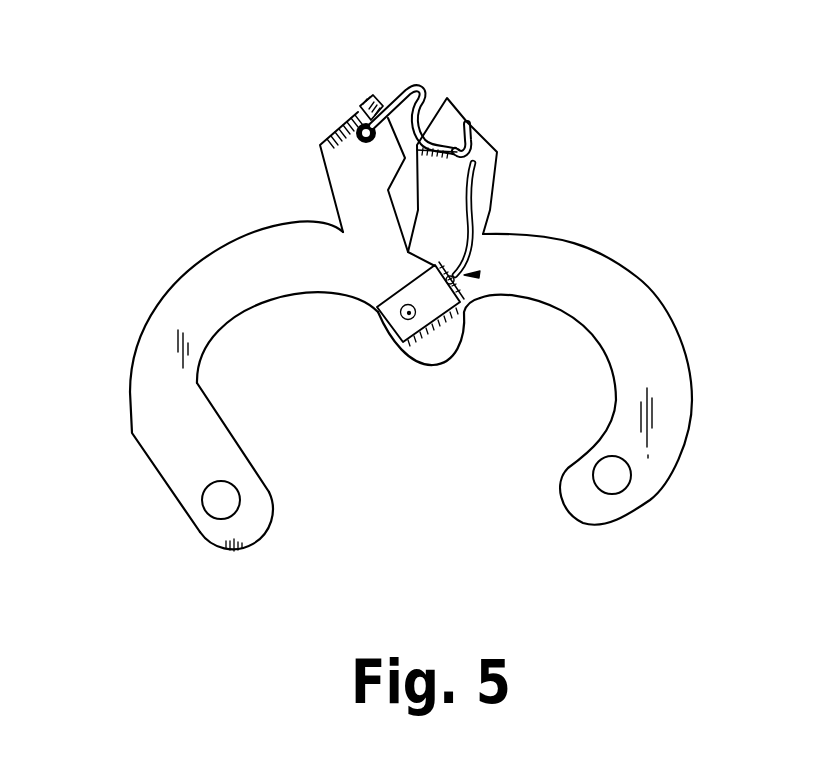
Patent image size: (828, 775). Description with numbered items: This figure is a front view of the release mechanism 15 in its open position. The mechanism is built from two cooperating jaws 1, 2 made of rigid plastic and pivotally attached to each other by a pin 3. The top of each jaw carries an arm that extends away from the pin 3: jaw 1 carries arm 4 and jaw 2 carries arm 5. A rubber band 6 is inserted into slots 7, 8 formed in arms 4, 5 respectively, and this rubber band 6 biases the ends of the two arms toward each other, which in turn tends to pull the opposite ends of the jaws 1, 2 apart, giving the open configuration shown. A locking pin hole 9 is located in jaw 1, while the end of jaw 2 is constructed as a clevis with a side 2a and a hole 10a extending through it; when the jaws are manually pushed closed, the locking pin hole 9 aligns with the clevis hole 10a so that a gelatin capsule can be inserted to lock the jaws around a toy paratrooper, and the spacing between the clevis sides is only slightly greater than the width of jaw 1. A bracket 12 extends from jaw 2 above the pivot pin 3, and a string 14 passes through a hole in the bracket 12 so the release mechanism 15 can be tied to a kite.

The jaw 1 is at (650, 478).
The jaw 2 is at (160, 352).
The side of clevis 2a is at (250, 527).
The pin 3 is at (406, 358).
The arm 4 is at (497, 151).
The arm 5 is at (338, 165).
The rubber band 6 is at (405, 96).
The slot 7 is at (468, 120).
The slot 8 is at (357, 113).
The locking pin hole 9 is at (615, 482).
The hole 10a is at (210, 498).
The bracket 12 is at (450, 313).
The string 14 is at (477, 224).
The release mechanism 15 is at (659, 297).